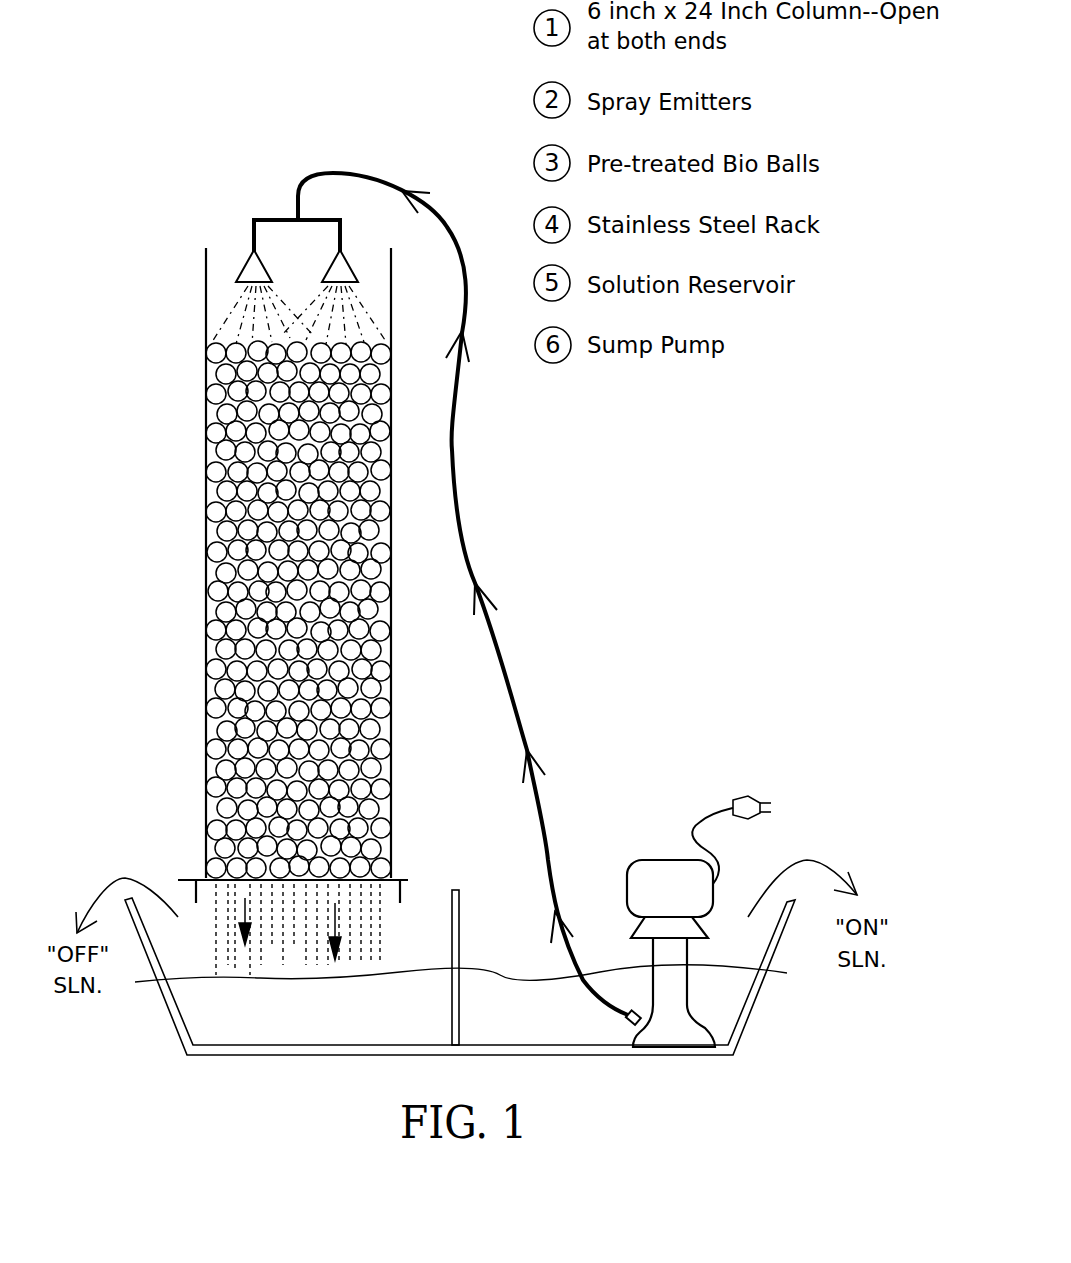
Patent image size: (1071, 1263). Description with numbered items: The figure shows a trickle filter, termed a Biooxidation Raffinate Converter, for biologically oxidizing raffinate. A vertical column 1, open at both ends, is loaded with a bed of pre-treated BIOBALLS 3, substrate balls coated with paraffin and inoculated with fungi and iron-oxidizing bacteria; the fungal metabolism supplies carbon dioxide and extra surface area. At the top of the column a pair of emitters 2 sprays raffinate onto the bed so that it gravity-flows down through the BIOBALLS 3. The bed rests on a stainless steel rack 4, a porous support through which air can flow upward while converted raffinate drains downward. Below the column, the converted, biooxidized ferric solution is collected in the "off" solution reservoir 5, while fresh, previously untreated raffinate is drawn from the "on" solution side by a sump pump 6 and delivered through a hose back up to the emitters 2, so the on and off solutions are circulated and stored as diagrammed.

The column 1 is at (274, 563).
The emitters 2 is at (298, 258).
The BIOBALLS 3 is at (298, 609).
The stainless steel rack 4 is at (313, 877).
The reservoir 5 is at (460, 972).
The sump pump 6 is at (670, 953).